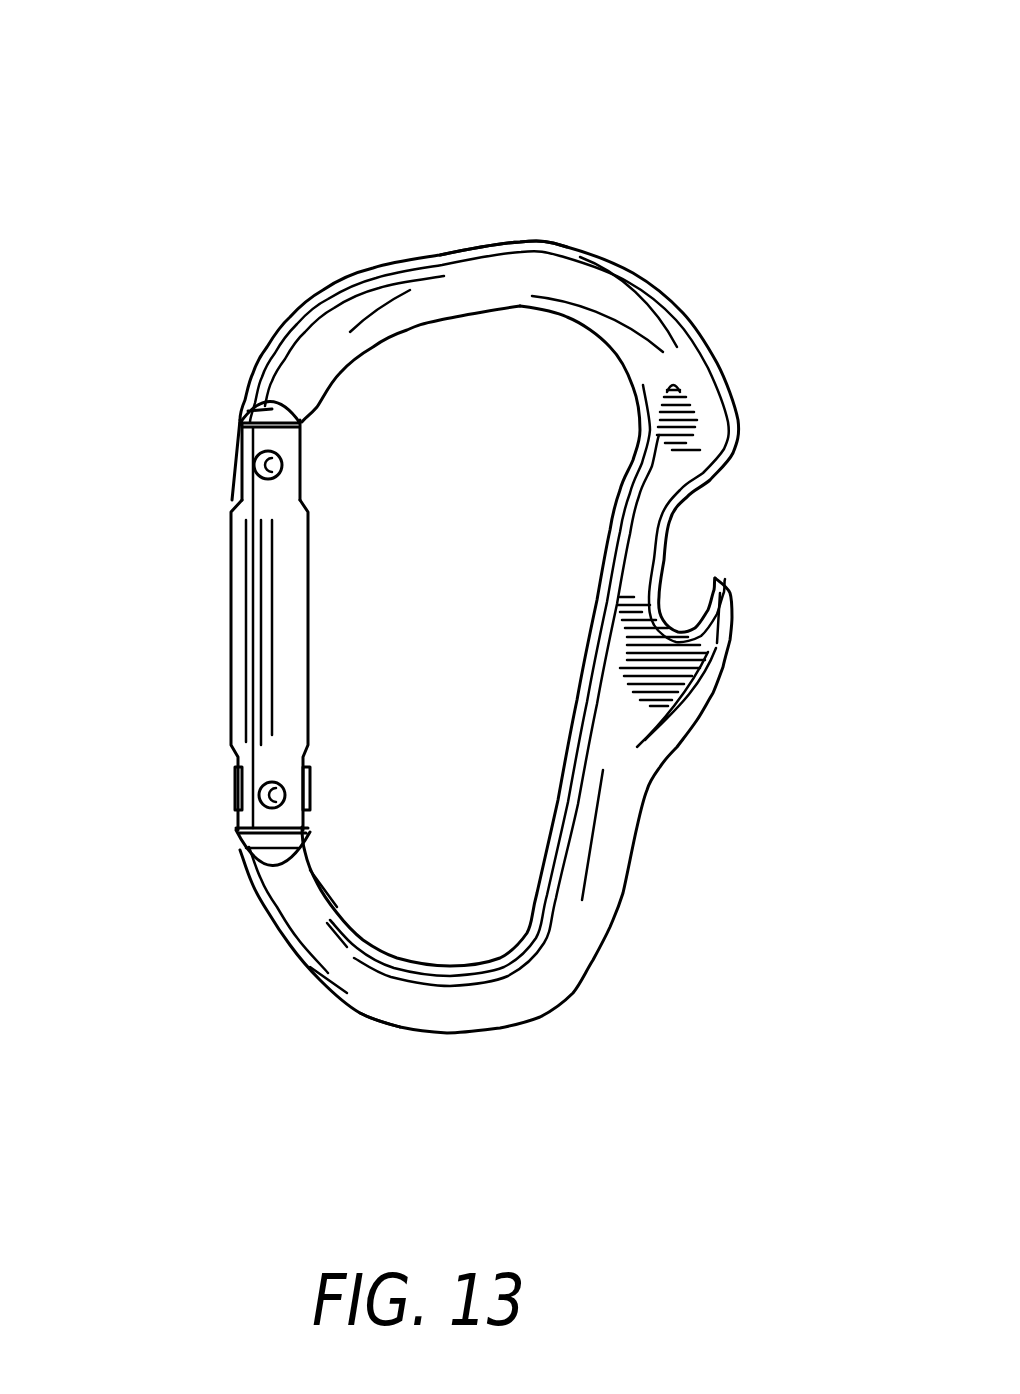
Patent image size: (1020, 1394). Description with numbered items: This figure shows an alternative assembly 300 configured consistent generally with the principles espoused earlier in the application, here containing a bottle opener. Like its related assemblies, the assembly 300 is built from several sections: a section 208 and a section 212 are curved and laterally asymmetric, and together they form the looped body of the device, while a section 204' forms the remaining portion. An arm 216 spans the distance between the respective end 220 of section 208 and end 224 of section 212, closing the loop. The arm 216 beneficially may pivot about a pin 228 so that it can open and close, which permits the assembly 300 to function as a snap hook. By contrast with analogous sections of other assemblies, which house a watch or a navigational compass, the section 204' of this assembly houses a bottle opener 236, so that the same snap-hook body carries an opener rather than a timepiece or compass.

The assembly 300 is at (702, 160).
The section 204' is at (567, 637).
The section 208 is at (487, 270).
The section 212 is at (392, 998).
The arm 216 is at (246, 620).
The end 220 is at (238, 403).
The end 224 is at (236, 815).
The pin 228 is at (245, 828).
The bottle opener 236 is at (697, 685).